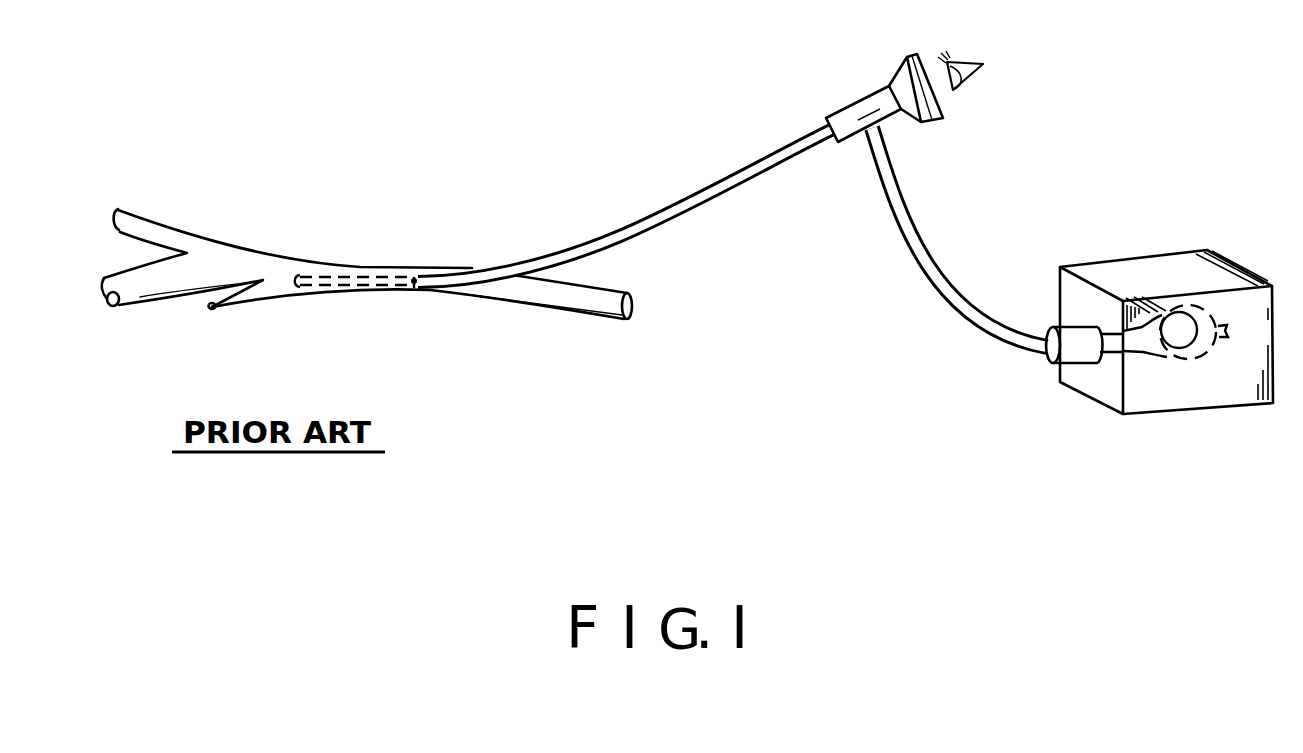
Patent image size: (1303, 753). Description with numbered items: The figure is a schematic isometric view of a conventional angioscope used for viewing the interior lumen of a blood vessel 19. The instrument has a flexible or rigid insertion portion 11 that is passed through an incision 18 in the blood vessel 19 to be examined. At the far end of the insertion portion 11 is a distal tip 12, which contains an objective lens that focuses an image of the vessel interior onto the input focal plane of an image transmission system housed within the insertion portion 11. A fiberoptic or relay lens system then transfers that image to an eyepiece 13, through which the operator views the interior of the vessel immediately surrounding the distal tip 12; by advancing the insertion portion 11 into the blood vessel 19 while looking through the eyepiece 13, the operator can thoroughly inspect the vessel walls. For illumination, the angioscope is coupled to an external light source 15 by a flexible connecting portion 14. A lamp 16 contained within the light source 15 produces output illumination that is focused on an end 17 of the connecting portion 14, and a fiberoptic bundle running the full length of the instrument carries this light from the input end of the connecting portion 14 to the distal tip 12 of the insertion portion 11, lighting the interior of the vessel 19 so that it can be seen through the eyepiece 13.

The insertion portion 11 is at (668, 205).
The distal tip 12 is at (297, 275).
The eyepiece 13 is at (898, 82).
The flexible connecting portion 14 is at (937, 293).
The external light source 15 is at (1145, 257).
The lamp 16 is at (1207, 356).
The end of connecting portion 17 is at (1112, 343).
The incision 18 is at (413, 277).
The blood vessel 19 is at (598, 302).